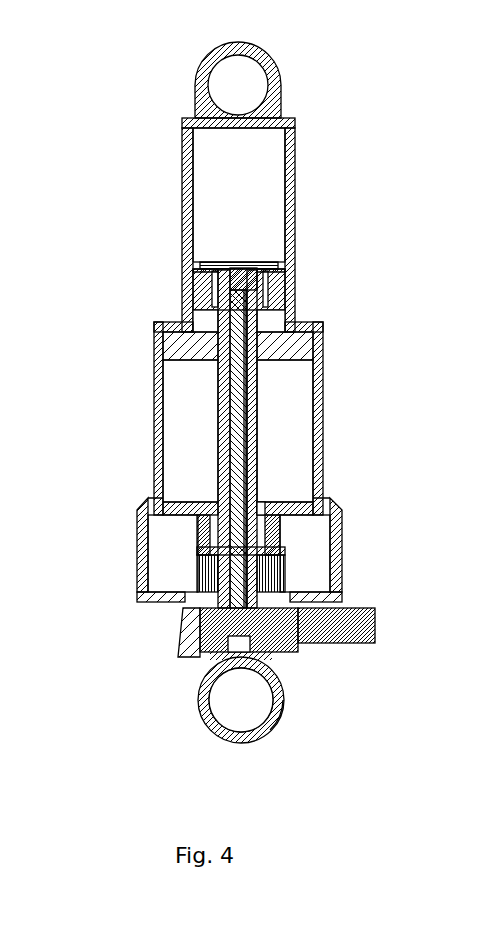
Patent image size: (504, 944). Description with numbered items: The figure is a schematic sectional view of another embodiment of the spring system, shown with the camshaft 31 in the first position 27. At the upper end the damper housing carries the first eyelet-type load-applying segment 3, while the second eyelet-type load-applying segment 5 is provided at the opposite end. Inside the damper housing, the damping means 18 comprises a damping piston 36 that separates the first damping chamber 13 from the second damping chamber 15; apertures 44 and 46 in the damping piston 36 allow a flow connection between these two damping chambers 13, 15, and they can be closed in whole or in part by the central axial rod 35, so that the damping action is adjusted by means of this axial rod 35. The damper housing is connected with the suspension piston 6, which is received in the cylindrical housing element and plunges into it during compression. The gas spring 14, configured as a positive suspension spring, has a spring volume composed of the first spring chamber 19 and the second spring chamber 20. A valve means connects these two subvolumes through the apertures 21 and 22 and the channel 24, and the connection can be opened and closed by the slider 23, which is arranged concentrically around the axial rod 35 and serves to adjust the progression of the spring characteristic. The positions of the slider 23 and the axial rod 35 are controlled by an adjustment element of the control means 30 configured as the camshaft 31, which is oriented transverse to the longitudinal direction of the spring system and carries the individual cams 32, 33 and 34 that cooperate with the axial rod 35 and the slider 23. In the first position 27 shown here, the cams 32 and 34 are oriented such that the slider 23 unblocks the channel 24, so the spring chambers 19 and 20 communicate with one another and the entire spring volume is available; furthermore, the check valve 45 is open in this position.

The eyelet-type load-applying segment 3 is at (180, 67).
The eyelet-type load-applying segment 5 is at (238, 760).
The suspension piston 6 is at (165, 352).
The first damping chamber 13 is at (260, 183).
The gas spring 14 is at (125, 415).
The second damping chamber 15 is at (262, 320).
The damping means 18 is at (163, 190).
The first spring chamber 19 is at (183, 453).
The second spring chamber 20 is at (157, 567).
The aperture 21 is at (270, 505).
The aperture 22 is at (283, 553).
The slider 23 is at (282, 558).
The channel 24 is at (280, 531).
The first position 27 is at (330, 705).
The control means 30 is at (362, 655).
The camshaft 31 is at (300, 640).
The cam 32 is at (240, 655).
The cam 33 is at (208, 720).
The cam 34 is at (195, 650).
The axial rod 35 is at (250, 415).
The damping piston 36 is at (188, 297).
The aperture 44 is at (283, 268).
The check valve 45 is at (243, 254).
The aperture 46 is at (200, 267).